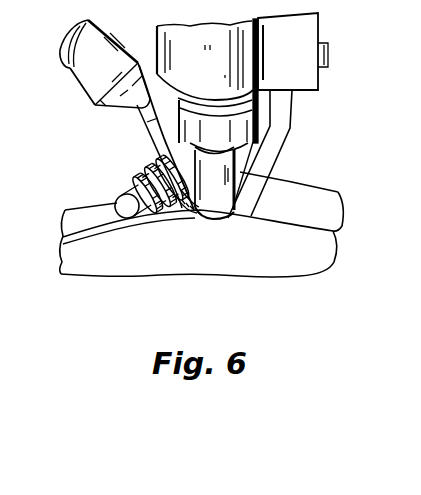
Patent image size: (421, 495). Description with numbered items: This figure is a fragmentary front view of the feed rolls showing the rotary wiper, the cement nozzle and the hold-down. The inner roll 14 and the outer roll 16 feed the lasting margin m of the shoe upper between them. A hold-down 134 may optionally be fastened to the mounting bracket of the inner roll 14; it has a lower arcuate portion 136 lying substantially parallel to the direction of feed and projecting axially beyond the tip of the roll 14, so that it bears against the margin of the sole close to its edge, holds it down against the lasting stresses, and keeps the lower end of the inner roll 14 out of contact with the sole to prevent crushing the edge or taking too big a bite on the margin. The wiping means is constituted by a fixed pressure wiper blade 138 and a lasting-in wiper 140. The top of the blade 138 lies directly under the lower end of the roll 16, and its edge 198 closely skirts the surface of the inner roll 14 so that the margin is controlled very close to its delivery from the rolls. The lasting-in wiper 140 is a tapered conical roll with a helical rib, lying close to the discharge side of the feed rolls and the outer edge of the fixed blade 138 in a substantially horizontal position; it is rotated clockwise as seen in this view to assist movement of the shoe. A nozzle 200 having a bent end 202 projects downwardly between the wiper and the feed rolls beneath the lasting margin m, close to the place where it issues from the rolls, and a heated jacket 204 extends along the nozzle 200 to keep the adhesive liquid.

The heated jacket 204 is at (112, 38).
The nozzle 200 is at (146, 125).
The edge of the blade 198 is at (158, 148).
The lasting-in wiper 140 is at (115, 200).
The pressure wiper blade 138 is at (158, 239).
The bent end 202 is at (190, 226).
The lower arcuate portion 136 is at (228, 218).
The hold-down 134 is at (272, 118).
The outer feed roll 16 is at (290, 143).
The inner feed roll 14 is at (258, 163).
The lasting margin m is at (306, 193).